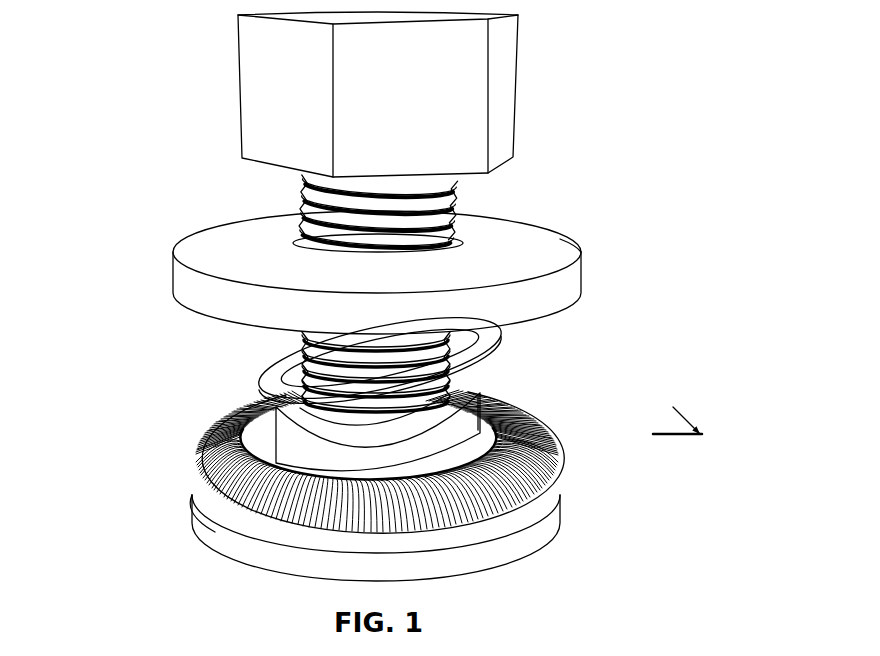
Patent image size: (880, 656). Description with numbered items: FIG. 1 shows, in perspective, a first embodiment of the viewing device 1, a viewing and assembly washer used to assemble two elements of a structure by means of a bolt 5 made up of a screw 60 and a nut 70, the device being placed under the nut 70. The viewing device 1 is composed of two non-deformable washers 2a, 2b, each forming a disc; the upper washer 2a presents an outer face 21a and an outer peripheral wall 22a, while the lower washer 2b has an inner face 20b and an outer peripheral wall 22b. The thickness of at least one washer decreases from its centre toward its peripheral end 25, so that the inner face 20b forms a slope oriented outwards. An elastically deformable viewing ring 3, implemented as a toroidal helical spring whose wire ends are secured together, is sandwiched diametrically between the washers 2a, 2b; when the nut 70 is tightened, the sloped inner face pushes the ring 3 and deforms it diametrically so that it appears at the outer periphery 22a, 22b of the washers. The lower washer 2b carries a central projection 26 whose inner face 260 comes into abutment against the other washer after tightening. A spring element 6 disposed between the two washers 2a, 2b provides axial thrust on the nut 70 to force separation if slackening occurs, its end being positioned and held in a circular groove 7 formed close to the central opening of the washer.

The viewing device 1 is at (658, 344).
The bolt 5 is at (578, 147).
The nut 70 is at (523, 100).
The screw 60 is at (463, 203).
The spring element 6 is at (493, 352).
The non-deformable washer 2a is at (172, 247).
The outer face 21a is at (545, 252).
The outer peripheral wall 22a is at (566, 289).
The peripheral end 25 is at (578, 257).
The circular groove 7 is at (252, 390).
The deformable viewing ring 3 is at (206, 440).
The central projection 26 is at (527, 432).
The inner face of the central projection 260 is at (468, 412).
The non-deformable washer 2b is at (188, 487).
The inner face 20b is at (549, 487).
The outer peripheral wall 22b is at (561, 512).